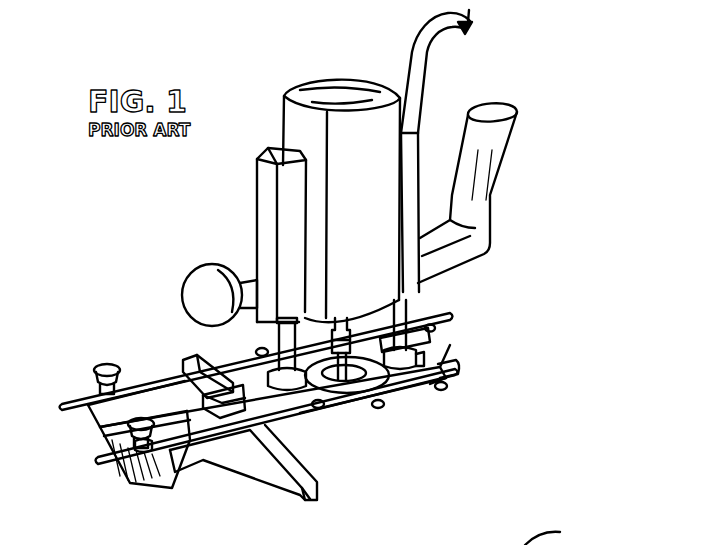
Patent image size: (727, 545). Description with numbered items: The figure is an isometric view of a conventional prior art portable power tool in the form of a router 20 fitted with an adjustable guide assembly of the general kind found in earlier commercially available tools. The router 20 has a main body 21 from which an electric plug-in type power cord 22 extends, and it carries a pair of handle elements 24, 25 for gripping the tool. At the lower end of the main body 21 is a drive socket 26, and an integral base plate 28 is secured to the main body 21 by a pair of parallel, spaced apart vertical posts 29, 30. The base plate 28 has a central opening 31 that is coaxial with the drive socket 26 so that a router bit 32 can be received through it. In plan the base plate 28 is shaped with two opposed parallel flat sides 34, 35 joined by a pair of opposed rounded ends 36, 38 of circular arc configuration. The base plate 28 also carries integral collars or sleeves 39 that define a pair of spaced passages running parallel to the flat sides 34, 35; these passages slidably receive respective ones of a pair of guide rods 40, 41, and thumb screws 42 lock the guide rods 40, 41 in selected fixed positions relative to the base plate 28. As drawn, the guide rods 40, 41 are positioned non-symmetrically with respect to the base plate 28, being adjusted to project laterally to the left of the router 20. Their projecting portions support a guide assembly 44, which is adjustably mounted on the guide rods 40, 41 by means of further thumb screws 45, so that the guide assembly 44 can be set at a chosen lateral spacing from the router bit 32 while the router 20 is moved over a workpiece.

The router 20 is at (450, 93).
The main body 21 is at (378, 176).
The power cord 22 is at (416, 50).
The handle element 24 is at (497, 170).
The handle element 25 is at (182, 290).
The drive socket 26 is at (341, 318).
The base plate 28 is at (408, 398).
The vertical post 29 is at (290, 350).
The vertical post 30 is at (432, 336).
The central opening 31 is at (378, 400).
The router bit 32 is at (392, 405).
The flat side 34 is at (376, 412).
The flat side 35 is at (300, 292).
The rounded end 36 is at (302, 428).
The rounded end 38 is at (462, 366).
The collars or sleeves 39 is at (262, 348).
The guide rod 40 is at (200, 452).
The guide rod 41 is at (144, 416).
The thumb screws 42 is at (418, 305).
The guide assembly 44 is at (140, 493).
The thumb screws 45 is at (126, 338).